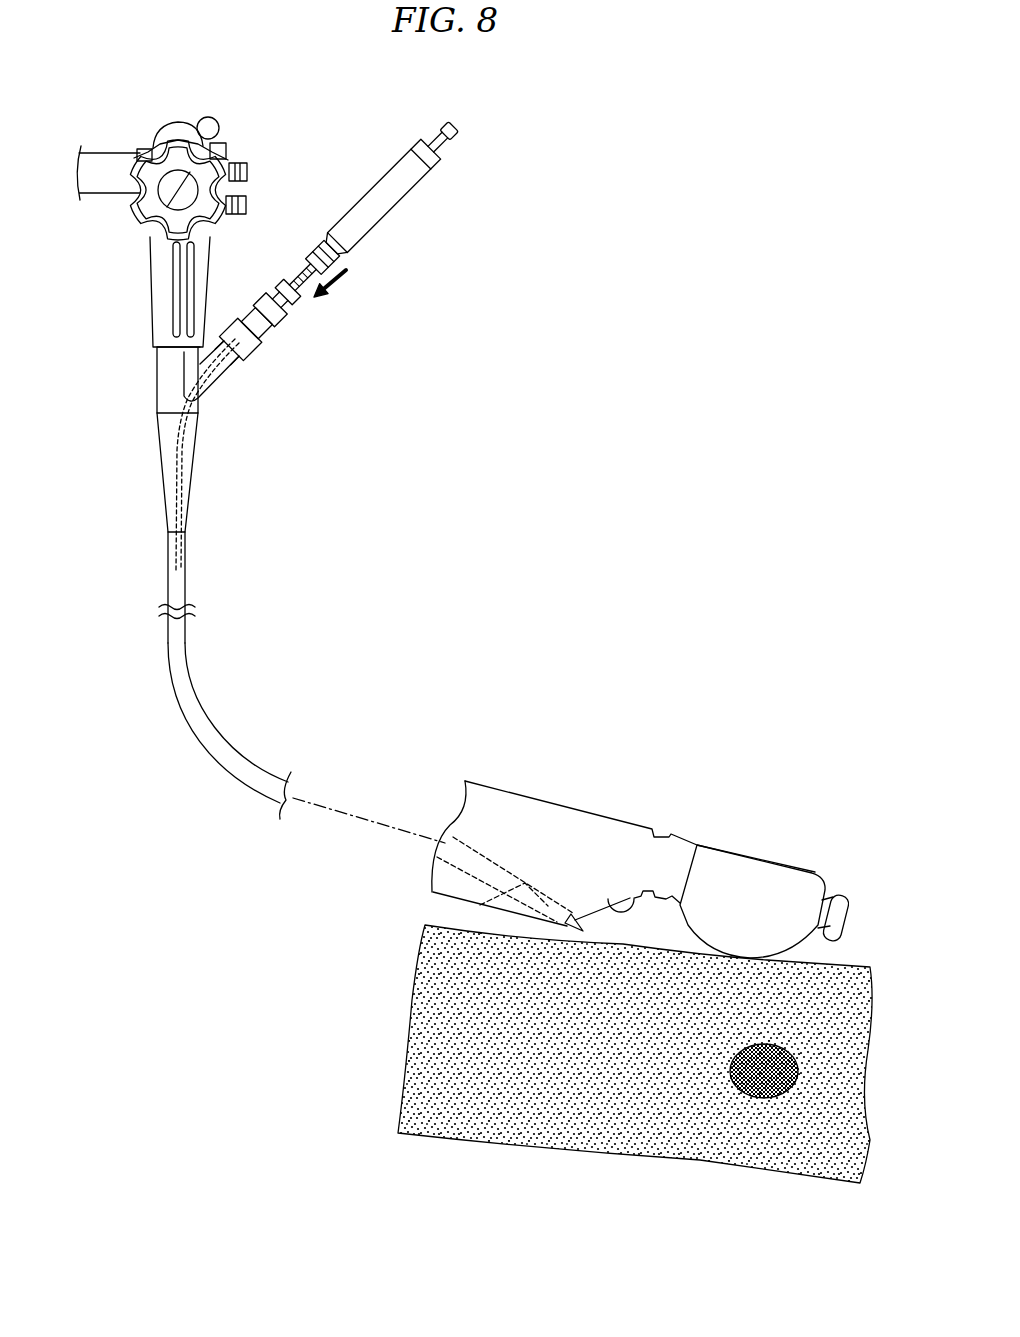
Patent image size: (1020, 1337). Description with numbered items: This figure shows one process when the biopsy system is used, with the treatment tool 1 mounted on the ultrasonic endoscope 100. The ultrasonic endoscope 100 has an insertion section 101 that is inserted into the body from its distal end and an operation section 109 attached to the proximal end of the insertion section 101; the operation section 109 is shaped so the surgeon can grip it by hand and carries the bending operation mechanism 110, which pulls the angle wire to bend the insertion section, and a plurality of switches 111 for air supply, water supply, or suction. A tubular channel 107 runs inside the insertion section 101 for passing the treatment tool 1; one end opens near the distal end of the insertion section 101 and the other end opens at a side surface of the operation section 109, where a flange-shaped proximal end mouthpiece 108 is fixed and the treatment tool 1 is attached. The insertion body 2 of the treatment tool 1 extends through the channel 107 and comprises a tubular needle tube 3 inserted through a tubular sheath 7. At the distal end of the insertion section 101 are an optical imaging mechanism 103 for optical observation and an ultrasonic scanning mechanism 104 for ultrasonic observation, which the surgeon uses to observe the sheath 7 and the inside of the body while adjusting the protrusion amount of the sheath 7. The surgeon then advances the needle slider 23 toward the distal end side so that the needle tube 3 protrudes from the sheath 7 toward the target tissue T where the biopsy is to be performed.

The treatment tool 1 is at (335, 198).
The insertion body 2 is at (188, 549).
The needle tube 3 is at (667, 993).
The sheath 7 is at (597, 912).
The needle slider 23 is at (395, 210).
The ultrasonic endoscope 100 is at (238, 135).
The insertion section 101 is at (652, 824).
The optical imaging mechanism 103 is at (630, 897).
The ultrasonic scanning mechanism 104 is at (775, 882).
The channel 107 is at (191, 470).
The proximal end mouthpiece 108 is at (226, 376).
The operation section 109 is at (151, 333).
The bending operation mechanism 110 is at (150, 156).
The switches 111 is at (247, 204).
The target tissue T is at (775, 1102).